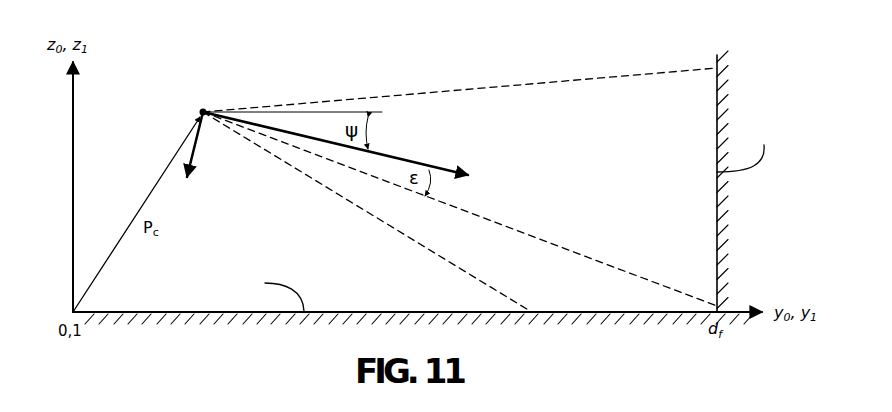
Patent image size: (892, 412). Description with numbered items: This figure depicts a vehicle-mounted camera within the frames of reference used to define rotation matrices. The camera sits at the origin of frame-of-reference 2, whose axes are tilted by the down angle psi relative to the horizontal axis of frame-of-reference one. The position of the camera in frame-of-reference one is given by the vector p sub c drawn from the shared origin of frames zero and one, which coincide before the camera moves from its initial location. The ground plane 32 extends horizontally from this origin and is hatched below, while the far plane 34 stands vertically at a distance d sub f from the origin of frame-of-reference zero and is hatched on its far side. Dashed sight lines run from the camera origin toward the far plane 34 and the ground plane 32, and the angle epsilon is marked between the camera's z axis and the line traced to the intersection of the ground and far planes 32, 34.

The frame-of-reference 2 is at (330, 148).
The ground plane 32 is at (560, 311).
The far plane 34 is at (717, 139).